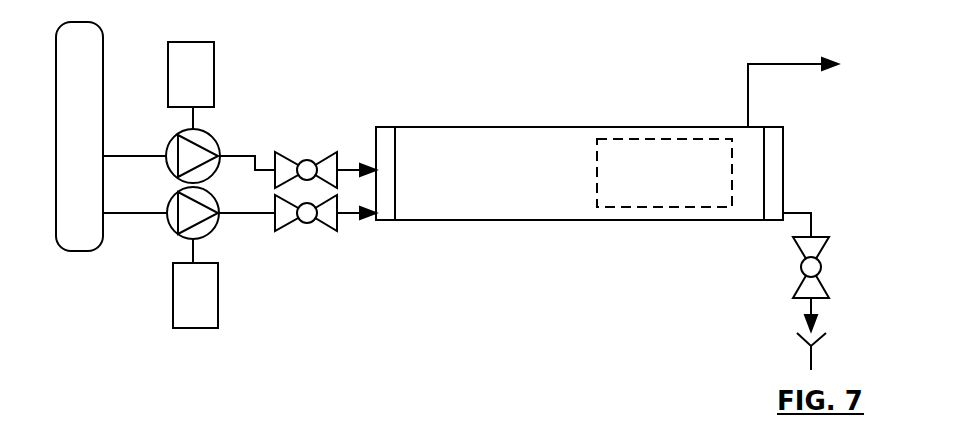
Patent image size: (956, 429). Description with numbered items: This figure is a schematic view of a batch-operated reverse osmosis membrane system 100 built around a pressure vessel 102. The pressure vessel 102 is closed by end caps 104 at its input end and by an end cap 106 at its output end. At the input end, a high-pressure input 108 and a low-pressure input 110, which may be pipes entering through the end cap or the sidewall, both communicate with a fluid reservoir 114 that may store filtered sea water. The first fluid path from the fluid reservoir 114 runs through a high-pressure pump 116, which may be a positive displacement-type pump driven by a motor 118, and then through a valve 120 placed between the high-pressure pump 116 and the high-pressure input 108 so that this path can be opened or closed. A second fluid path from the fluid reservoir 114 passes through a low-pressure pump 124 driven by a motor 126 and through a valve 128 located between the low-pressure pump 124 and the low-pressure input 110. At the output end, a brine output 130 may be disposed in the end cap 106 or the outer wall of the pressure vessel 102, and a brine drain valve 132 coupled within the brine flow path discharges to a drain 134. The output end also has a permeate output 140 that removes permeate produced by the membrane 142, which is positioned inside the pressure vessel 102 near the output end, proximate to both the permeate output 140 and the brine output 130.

The membrane system 100 is at (440, 52).
The pressure vessel 102 is at (535, 127).
The end caps 104 is at (386, 127).
The end cap 106 is at (778, 127).
The high-pressure input 108 is at (347, 169).
The low-pressure input 110 is at (350, 216).
The fluid reservoir 114 is at (103, 42).
The high-pressure pump 116 is at (169, 146).
The motor 118 is at (168, 50).
The valve 120 is at (276, 152).
The low-pressure pump 124 is at (178, 234).
The motor 126 is at (173, 305).
The valve 128 is at (291, 226).
The brine output 130 is at (800, 215).
The brine drain valve 132 is at (801, 269).
The drain 134 is at (808, 338).
The permeate output 140 is at (748, 92).
The membrane 142 is at (597, 172).